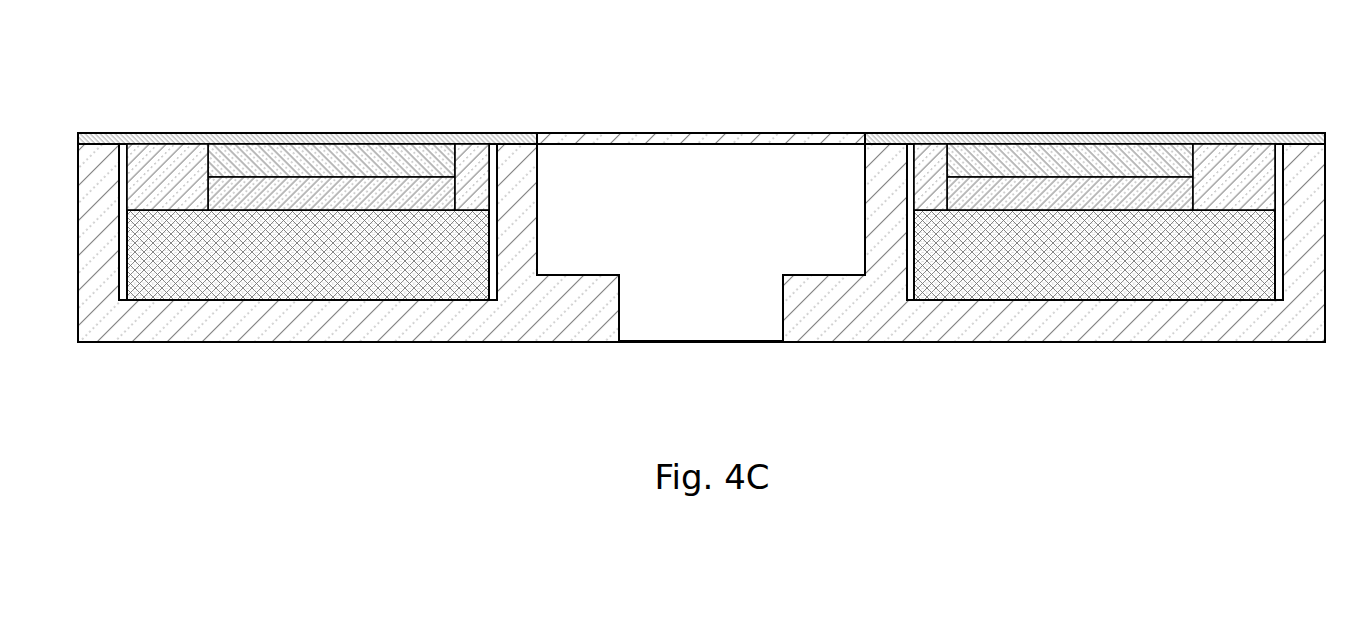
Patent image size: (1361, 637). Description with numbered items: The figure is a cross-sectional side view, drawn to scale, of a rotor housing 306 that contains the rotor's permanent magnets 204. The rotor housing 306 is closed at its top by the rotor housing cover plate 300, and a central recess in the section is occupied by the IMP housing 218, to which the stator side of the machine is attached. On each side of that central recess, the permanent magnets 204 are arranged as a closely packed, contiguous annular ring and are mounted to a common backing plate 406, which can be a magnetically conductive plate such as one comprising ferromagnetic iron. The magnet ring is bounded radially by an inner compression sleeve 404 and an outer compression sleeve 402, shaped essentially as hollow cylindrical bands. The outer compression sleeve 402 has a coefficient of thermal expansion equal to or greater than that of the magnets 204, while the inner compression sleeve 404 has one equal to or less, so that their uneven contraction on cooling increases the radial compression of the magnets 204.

The rotor housing cover plate 300 is at (470, 133).
The inner compression sleeve 404 is at (930, 155).
The outer compression sleeve 402 is at (1243, 158).
The permanent magnets 204 is at (1040, 188).
The backing plate 406 is at (1085, 268).
The IMP housing 218 is at (691, 206).
The rotor housing 306 is at (827, 324).